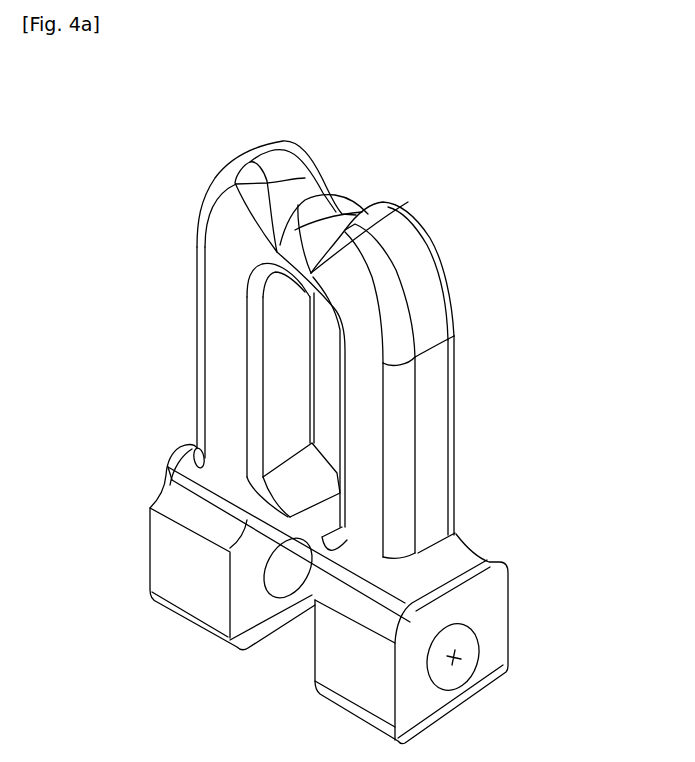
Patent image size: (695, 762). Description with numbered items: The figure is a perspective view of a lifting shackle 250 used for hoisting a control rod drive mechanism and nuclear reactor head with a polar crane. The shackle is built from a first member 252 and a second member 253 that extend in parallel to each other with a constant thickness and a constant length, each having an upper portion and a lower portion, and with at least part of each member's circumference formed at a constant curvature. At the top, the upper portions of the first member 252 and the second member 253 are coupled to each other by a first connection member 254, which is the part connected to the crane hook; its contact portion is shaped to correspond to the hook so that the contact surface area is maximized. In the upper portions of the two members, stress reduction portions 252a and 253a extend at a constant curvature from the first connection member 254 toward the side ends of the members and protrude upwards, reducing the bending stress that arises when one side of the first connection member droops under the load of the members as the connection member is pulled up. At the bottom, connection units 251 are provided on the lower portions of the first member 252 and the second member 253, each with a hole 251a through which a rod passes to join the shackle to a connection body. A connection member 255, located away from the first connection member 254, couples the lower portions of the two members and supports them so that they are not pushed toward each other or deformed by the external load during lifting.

The lifting shackle 250 is at (517, 223).
The connection unit 251 is at (500, 618).
The hole 251a is at (461, 661).
The first member 252 is at (212, 380).
The stress reduction portion 252a is at (268, 157).
The second member 253 is at (407, 432).
The stress reduction portion 253a is at (400, 210).
The first connection member 254 is at (337, 207).
The connection member 255 is at (293, 528).